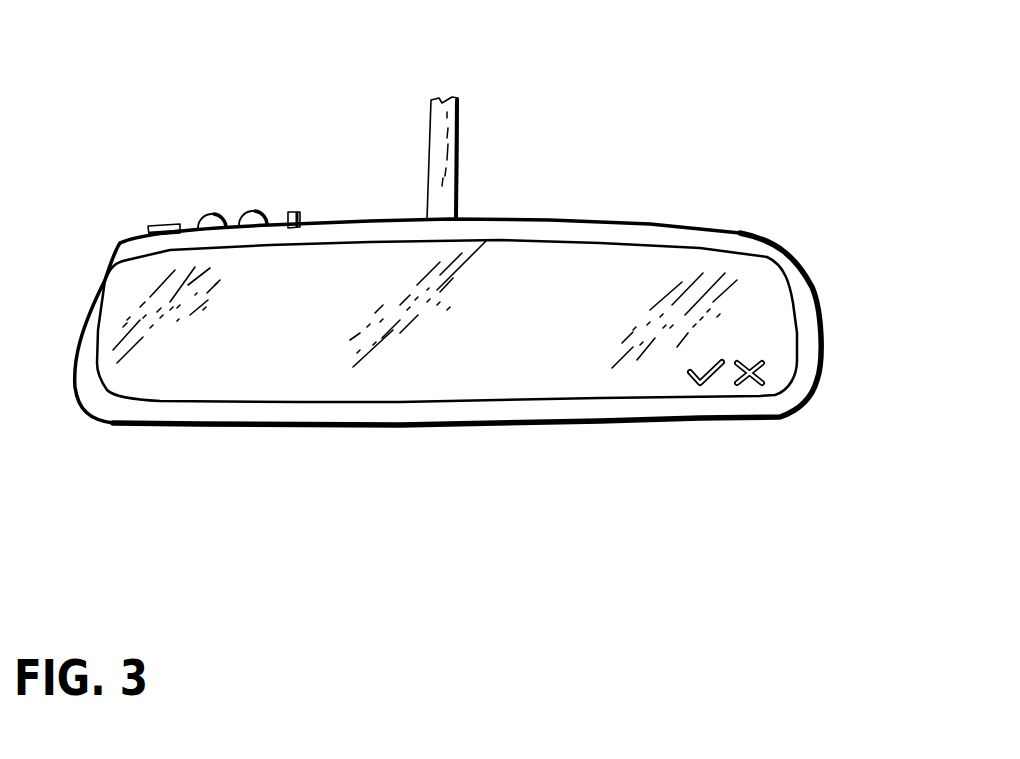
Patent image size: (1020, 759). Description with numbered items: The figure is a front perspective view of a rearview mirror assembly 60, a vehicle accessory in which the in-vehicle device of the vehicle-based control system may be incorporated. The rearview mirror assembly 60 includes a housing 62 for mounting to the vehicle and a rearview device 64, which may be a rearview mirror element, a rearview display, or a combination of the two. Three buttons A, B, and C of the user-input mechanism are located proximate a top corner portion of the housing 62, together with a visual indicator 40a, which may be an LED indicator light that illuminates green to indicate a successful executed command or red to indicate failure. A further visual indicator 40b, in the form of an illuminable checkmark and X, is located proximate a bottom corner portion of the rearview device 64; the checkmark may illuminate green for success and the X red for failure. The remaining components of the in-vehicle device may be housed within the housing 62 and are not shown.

The rearview mirror assembly 60 is at (496, 97).
The housing 62 is at (705, 230).
The rearview device 64 is at (763, 333).
The visual indicator 40a is at (296, 212).
The visual indicator 40b is at (754, 384).
The button A is at (170, 224).
The button B is at (213, 212).
The button C is at (255, 210).